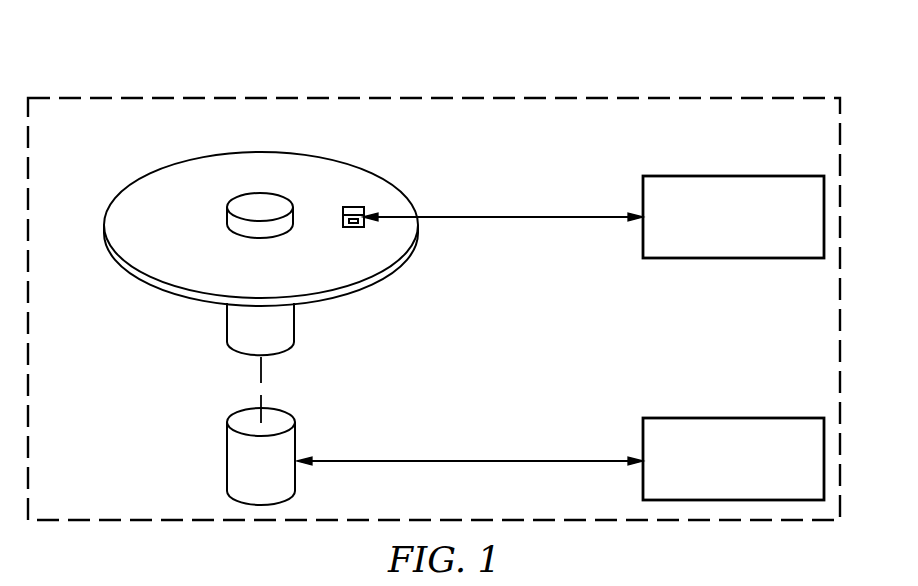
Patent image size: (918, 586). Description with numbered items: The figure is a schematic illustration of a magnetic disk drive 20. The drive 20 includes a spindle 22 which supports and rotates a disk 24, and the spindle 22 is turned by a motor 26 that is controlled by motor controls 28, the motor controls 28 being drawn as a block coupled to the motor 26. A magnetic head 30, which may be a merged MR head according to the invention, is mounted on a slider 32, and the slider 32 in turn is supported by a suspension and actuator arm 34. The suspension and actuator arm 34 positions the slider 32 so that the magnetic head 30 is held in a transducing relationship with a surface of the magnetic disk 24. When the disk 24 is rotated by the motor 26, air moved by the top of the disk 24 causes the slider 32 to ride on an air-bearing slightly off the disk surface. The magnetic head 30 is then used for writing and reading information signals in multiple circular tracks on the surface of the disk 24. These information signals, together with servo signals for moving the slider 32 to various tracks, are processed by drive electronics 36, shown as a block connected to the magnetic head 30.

The magnetic disk drive 20 is at (482, 72).
The spindle 22 is at (227, 325).
The disk 24 is at (140, 190).
The motor 26 is at (227, 460).
The motor controls 28 is at (730, 417).
The magnetic head 30 is at (354, 228).
The slider 32 is at (354, 206).
The suspension and actuator arm 34 is at (497, 218).
The drive electronics 36 is at (730, 175).